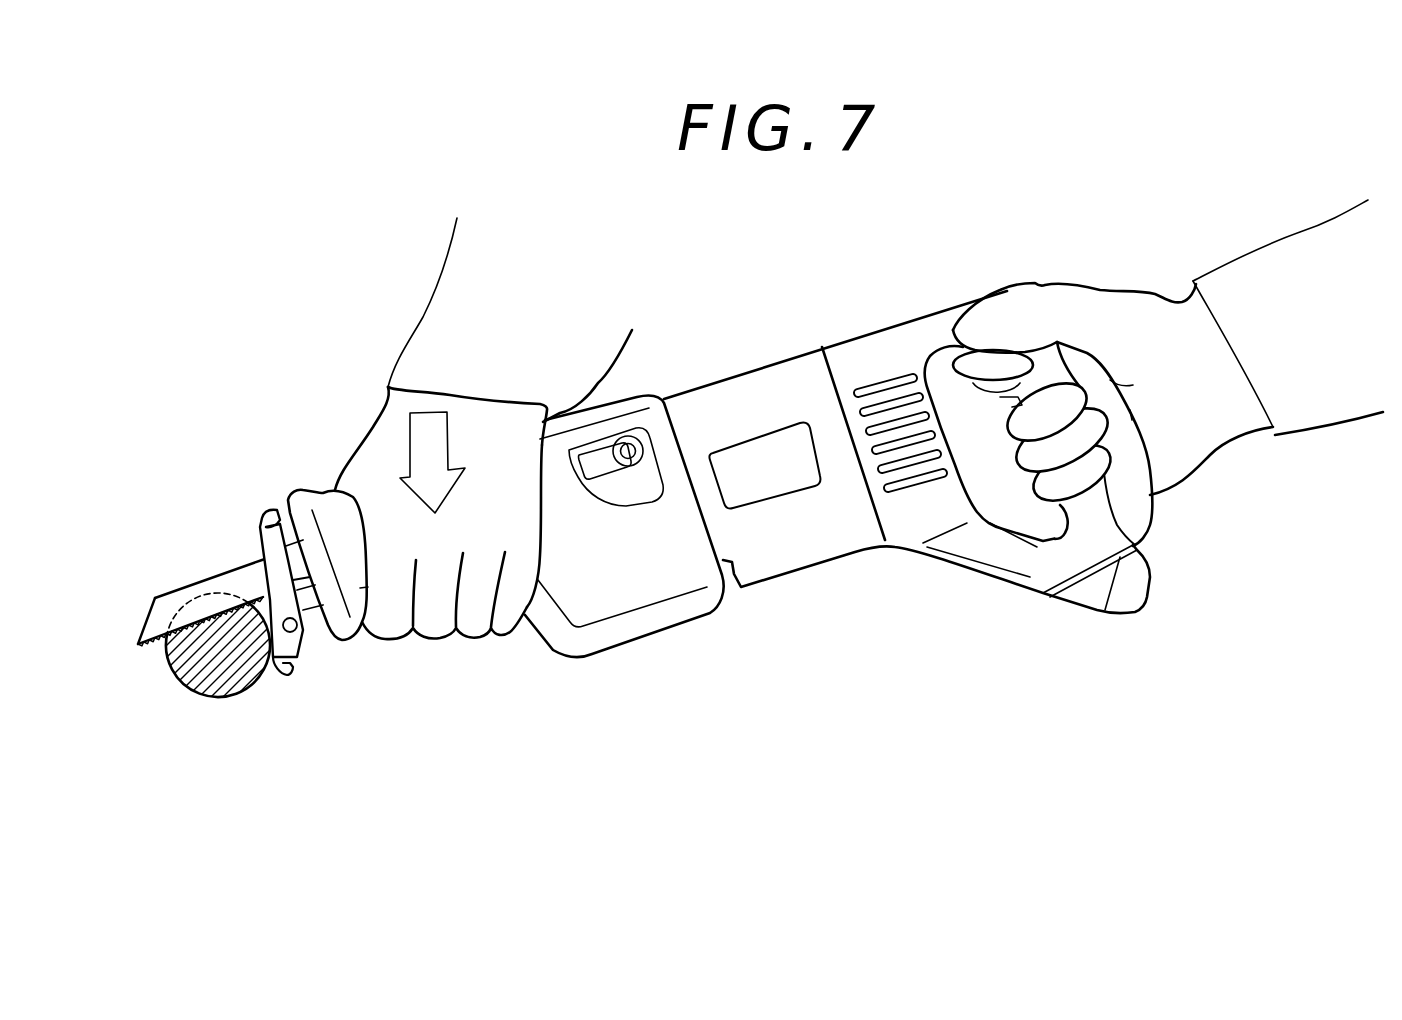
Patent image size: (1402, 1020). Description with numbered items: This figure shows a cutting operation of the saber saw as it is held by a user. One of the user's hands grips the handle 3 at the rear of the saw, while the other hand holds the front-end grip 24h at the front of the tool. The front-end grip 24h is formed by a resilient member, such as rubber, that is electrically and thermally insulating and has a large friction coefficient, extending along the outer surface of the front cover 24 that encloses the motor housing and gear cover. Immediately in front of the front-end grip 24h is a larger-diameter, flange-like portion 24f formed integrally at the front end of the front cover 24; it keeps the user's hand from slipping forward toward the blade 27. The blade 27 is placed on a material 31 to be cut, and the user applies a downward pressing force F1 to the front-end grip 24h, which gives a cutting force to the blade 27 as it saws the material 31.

The handle 3 is at (1012, 291).
The front cover 24 is at (582, 643).
The larger-diameter portion 24f is at (293, 497).
The front-end grip 24h is at (343, 522).
The blade 27 is at (163, 600).
The material 31 is at (210, 677).
The pressing force F1 is at (444, 465).